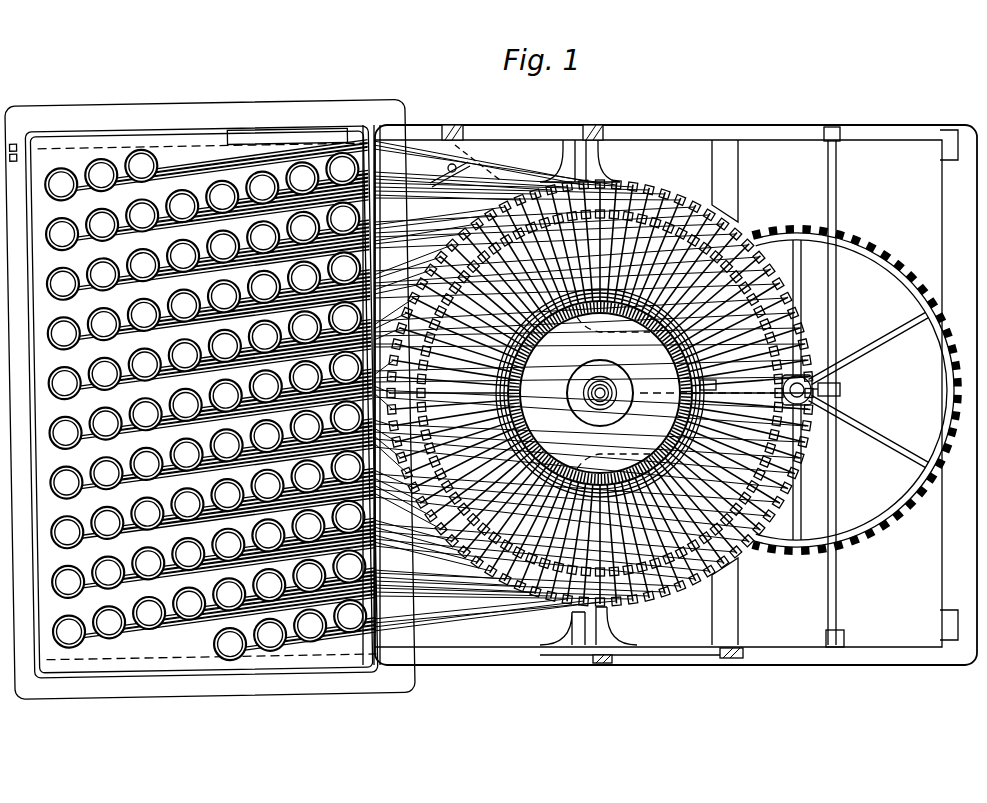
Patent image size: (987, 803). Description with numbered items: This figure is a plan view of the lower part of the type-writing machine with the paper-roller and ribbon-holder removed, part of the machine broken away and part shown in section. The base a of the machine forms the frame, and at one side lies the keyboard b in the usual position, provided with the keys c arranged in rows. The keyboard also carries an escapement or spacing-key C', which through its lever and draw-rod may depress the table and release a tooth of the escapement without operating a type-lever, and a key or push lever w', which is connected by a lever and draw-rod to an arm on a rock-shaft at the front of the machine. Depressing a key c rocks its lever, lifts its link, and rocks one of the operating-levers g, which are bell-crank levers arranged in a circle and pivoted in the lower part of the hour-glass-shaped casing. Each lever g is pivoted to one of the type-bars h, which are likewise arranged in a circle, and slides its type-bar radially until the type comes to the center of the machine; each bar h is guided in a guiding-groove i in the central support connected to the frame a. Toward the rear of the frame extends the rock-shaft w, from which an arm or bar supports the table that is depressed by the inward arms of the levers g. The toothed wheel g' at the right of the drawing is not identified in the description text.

The base a is at (670, 395).
The keyboard b is at (193, 402).
The keys c is at (426, 393).
The spacing-key C' is at (210, 401).
The push lever w' is at (363, 157).
The type-bars h is at (610, 393).
The guiding-groove i is at (708, 402).
The operating-levers g is at (600, 394).
The gear wheel g' is at (855, 390).
The rock-shaft w is at (838, 390).